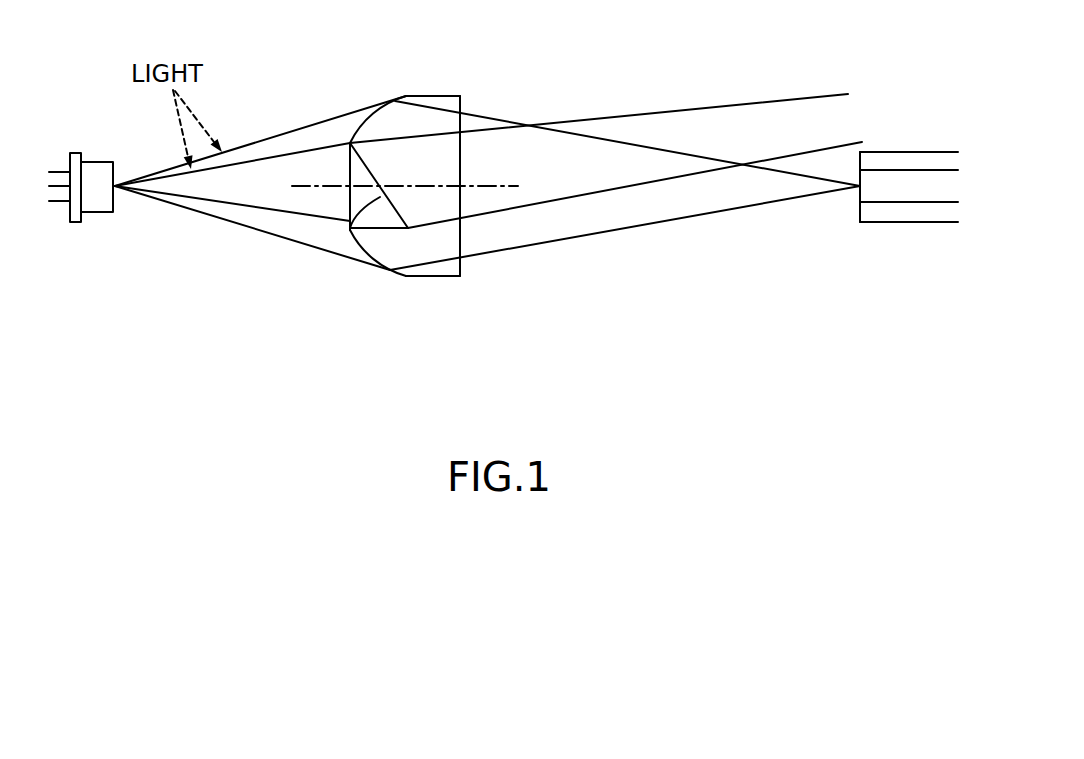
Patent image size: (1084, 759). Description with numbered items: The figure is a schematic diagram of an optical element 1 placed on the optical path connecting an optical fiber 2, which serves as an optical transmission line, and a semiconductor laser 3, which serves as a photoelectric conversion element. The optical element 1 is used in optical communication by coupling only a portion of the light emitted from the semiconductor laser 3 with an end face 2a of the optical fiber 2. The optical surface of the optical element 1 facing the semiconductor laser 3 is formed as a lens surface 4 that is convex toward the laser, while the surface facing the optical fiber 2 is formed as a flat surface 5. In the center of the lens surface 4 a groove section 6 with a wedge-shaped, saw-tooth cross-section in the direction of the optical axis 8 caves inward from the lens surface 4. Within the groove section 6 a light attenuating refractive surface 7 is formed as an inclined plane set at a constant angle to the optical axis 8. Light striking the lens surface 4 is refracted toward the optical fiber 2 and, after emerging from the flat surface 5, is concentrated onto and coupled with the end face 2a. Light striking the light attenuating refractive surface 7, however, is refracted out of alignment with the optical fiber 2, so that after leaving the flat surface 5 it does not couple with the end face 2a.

The optical element 1 is at (435, 96).
The optical fiber 2 is at (895, 152).
The end face 2a is at (860, 197).
The semiconductor laser 3 is at (95, 162).
The lens surface 4 is at (363, 123).
The flat surface 5 is at (460, 203).
The groove section 6 is at (356, 175).
The light attenuating refractive surface 7 is at (350, 222).
The optical axis 8 is at (517, 186).